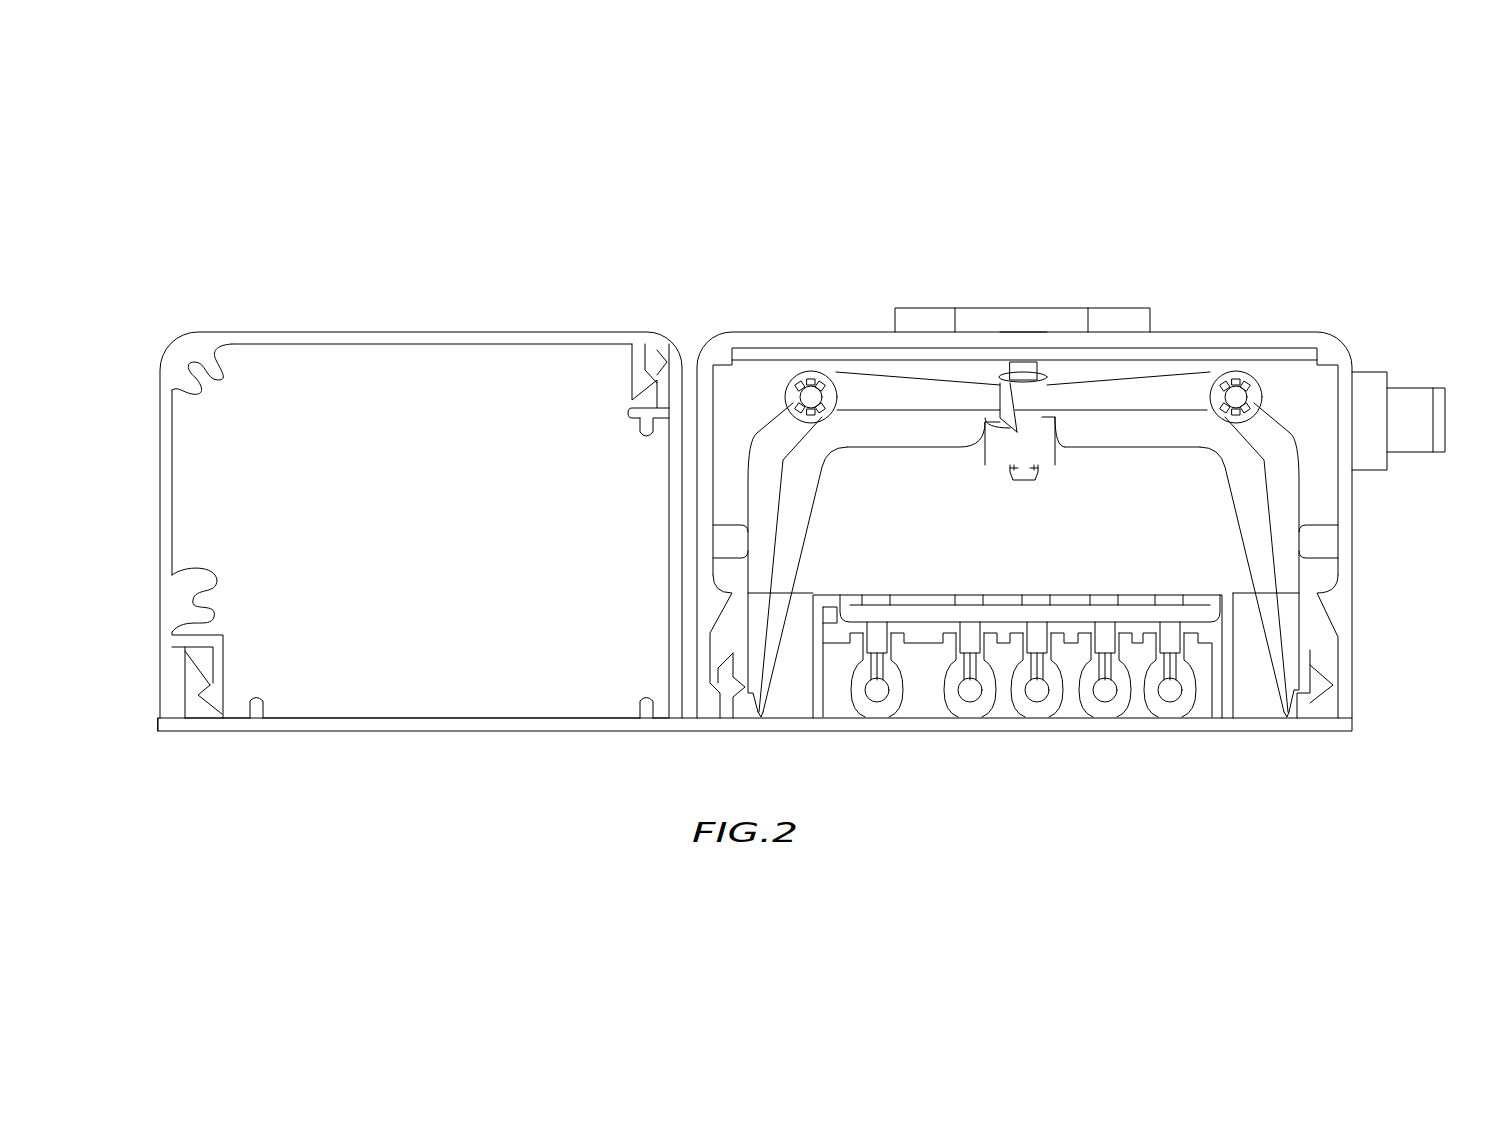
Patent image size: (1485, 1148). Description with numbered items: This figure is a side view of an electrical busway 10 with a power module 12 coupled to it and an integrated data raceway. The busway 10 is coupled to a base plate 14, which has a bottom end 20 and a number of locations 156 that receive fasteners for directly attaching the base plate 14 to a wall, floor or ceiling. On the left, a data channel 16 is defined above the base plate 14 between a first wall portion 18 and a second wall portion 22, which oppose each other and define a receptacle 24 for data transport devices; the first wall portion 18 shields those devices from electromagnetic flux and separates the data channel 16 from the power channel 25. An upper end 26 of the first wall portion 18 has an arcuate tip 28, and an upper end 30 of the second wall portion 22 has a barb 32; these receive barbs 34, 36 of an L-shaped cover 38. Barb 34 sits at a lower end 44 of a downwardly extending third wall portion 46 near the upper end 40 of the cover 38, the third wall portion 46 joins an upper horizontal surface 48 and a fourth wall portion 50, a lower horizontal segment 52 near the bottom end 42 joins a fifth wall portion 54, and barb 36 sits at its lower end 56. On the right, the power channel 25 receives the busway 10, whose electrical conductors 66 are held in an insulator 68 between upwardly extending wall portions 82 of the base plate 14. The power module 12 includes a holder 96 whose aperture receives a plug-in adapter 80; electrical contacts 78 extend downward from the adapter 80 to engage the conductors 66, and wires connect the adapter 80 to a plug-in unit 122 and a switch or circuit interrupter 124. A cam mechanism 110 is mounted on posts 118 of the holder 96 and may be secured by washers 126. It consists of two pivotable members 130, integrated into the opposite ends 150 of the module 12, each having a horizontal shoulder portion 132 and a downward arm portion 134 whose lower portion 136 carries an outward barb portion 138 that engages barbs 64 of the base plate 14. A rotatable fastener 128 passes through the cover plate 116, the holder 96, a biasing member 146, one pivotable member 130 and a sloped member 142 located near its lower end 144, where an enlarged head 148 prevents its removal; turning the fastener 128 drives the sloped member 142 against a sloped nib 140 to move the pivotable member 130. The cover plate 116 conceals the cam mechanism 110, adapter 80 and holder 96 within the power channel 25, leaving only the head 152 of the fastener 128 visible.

The electrical busway 10 is at (1070, 722).
The power module 12 is at (1086, 439).
The base plate 14 is at (936, 722).
The data channel 16 is at (399, 508).
The first wall portion 18 is at (676, 522).
The bottom end 20 is at (604, 730).
The second wall portion 22 is at (192, 724).
The receptacle 24 is at (472, 724).
The power channel 25 is at (1039, 572).
The upper end 26 is at (660, 372).
The arcuate tip 28 is at (651, 360).
The upper end 30 is at (190, 665).
The barb 32 is at (198, 652).
The barb 34 is at (628, 390).
The barb 36 is at (216, 700).
The cover 38 is at (389, 318).
The upper end 40 is at (438, 330).
The bottom end 42 is at (164, 718).
The lower end 44 is at (630, 372).
The third wall portion 46 is at (628, 360).
The upper generally horizontal surface 48 is at (314, 330).
The fourth wall portion 50 is at (166, 492).
The lower generally horizontal segment 52 is at (188, 633).
The fifth wall portion 54 is at (224, 662).
The lower end 56 is at (222, 682).
The barbs 64 is at (722, 672).
The electrical conductors 66 is at (880, 690).
The insulator 68 is at (1200, 716).
The electrical contact 78 is at (870, 672).
The plug-in adapter 80 is at (1186, 616).
The wall portions 82 is at (818, 698).
The holder 96 is at (1037, 519).
The cam mechanism 110 is at (1007, 526).
The cover plate 116 is at (1280, 336).
The posts 118 is at (810, 396).
The plug-in unit 122 is at (956, 322).
The switch or circuit interrupter 124 is at (1418, 398).
The washers 126 is at (802, 378).
The rotatable fastener 128 is at (1044, 326).
The pivotable members 130 is at (862, 385).
The shoulder portion 132 is at (840, 388).
The arm portion 134 is at (752, 466).
The lower portion 136 is at (768, 716).
The barb portion 138 is at (752, 716).
The sloped nib 140 is at (1000, 397).
The sloped member 142 is at (992, 442).
The lower end 144 is at (1010, 480).
The biasing member 146 is at (1046, 380).
The enlarged head 148 is at (1042, 480).
The opposite ends 150 is at (1297, 346).
The head 152 is at (1012, 328).
The locations 156 is at (298, 722).